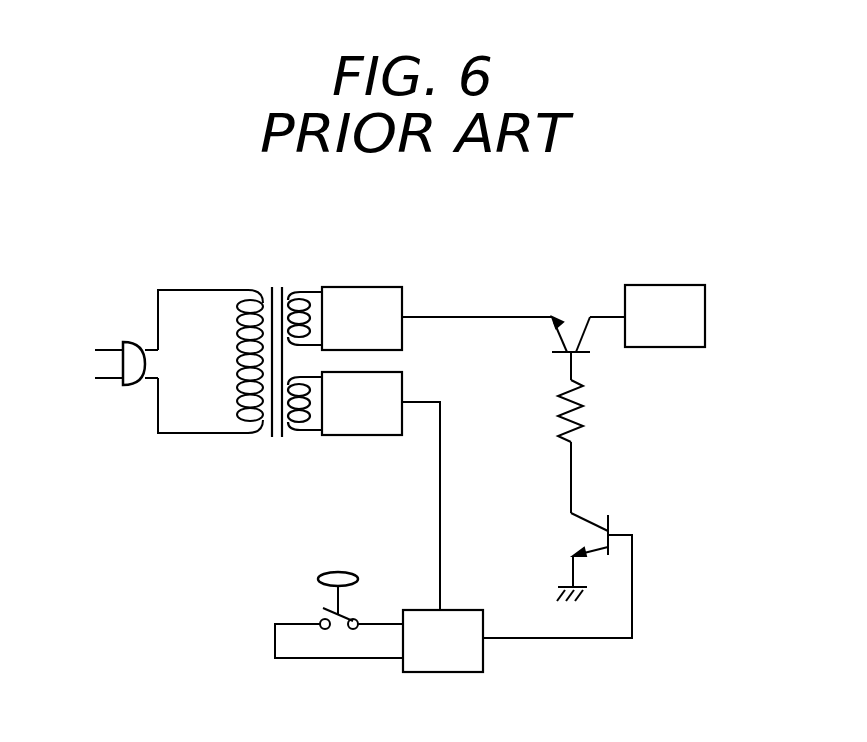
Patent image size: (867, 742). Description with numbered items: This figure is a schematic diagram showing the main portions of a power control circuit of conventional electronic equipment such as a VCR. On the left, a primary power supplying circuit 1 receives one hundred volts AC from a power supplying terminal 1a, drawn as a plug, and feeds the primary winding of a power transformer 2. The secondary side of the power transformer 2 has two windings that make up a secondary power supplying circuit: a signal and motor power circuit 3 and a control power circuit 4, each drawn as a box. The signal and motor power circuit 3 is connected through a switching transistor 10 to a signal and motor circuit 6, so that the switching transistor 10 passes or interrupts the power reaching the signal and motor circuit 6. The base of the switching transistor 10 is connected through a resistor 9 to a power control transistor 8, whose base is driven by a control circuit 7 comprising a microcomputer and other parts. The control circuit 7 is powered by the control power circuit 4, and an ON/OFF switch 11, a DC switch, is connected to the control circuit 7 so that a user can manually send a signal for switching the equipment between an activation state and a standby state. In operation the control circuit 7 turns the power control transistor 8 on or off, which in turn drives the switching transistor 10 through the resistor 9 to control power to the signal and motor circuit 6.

The primary power supplying circuit 1 is at (183, 292).
The power supplying terminal 1a is at (132, 341).
The power transformer 2 is at (275, 284).
The signal and motor power circuit 3 is at (385, 288).
The control power circuit 4 is at (392, 372).
The signal and motor circuit 6 is at (690, 285).
The control circuit 7 is at (470, 609).
The power control transistor 8 is at (612, 518).
The resistor 9 is at (583, 391).
The switching transistor 10 is at (571, 323).
The ON/OFF switch 11 is at (338, 572).